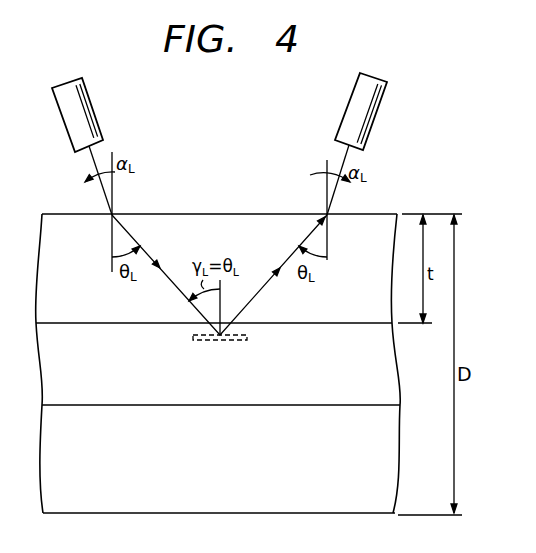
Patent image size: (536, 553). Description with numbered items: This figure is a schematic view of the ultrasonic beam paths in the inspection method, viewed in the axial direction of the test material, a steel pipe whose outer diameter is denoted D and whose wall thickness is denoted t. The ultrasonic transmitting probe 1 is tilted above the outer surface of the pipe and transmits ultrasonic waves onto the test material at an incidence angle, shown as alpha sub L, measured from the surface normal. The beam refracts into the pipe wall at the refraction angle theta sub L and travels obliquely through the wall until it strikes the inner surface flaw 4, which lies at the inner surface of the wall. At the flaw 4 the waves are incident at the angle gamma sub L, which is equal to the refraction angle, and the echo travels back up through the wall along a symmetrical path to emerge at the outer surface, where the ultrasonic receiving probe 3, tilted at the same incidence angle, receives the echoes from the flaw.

The ultrasonic transmitting probe 1 is at (94, 97).
The ultrasonic receiving probe 3 is at (388, 88).
The inner surface flaw 4 is at (230, 342).